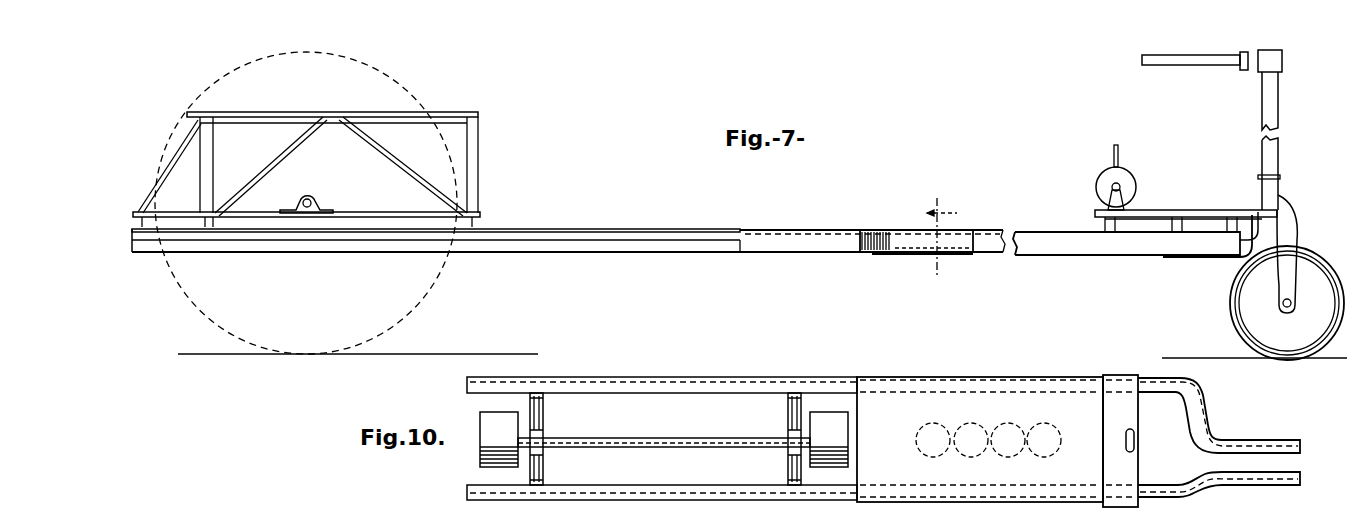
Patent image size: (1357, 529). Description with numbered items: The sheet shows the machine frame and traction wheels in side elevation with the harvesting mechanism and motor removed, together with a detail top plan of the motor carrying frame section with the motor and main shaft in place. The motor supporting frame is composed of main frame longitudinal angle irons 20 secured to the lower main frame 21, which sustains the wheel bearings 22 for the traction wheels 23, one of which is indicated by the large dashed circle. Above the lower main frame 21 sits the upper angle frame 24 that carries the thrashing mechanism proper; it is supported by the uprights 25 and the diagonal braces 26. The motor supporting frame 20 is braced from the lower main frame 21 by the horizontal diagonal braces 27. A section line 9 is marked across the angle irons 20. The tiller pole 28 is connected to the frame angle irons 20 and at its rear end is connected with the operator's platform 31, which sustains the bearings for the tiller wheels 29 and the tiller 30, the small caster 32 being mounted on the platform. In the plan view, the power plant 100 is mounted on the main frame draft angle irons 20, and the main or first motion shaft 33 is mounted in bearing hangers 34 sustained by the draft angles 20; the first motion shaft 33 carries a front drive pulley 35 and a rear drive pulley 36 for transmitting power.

In FIG. 7, the section line 9- 9 is at (942, 239).
In FIG. 7, the main frame longitudinal angle irons 20 is at (799, 243).
In FIG. 10, the main frame longitudinal angle irons 20 is at (765, 378).
In FIG. 7, the lower main frame 21 is at (373, 218).
In FIG. 7, the wheel bearings 22 is at (316, 203).
In FIG. 7, the traction wheels 23 is at (214, 324).
In FIG. 7, the upper angle frame 24 is at (282, 106).
In FIG. 7, the uprights 25 is at (213, 153).
In FIG. 7, the diagonal braces 26 is at (362, 135).
In FIG. 7, the horizontal diagonal braces 27 is at (626, 223).
In FIG. 7, the tiller pole 28 is at (1065, 247).
In FIG. 7, the tiller wheels 29 is at (1233, 302).
In FIG. 7, the tiller 30 is at (1209, 67).
In FIG. 7, the operator's platform 31 is at (1200, 210).
In FIG. 7, the caster wheel 32 is at (1128, 182).
In FIG. 10, the main shaft 33 is at (657, 438).
In FIG. 10, the bearing hangers 34 is at (543, 429).
In FIG. 10, the front drive pulley 35 is at (499, 439).
In FIG. 10, the rear drive pulley 36 is at (829, 439).
In FIG. 10, the power plant 100 is at (997, 441).